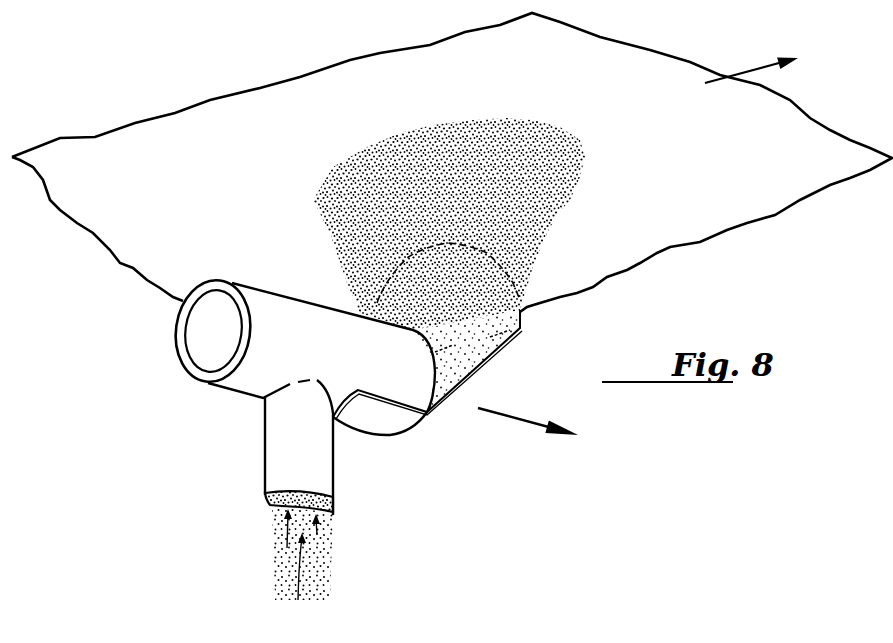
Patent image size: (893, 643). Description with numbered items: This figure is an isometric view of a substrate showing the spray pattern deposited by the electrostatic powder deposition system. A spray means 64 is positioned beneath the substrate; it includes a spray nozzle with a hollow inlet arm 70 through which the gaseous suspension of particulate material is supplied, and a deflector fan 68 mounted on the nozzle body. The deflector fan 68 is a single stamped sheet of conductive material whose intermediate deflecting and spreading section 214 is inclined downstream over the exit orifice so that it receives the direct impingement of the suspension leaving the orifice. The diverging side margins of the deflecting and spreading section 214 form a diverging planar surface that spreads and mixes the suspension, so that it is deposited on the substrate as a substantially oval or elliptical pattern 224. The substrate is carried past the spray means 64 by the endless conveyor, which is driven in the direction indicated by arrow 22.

The arrow 22 is at (738, 72).
The oval or elliptical pattern 224 is at (507, 118).
The deflector fan 68 is at (503, 267).
The spray means 64 is at (218, 280).
The intermediate deflecting and spreading section 214 is at (473, 378).
The hollow inlet arm 70 is at (278, 443).